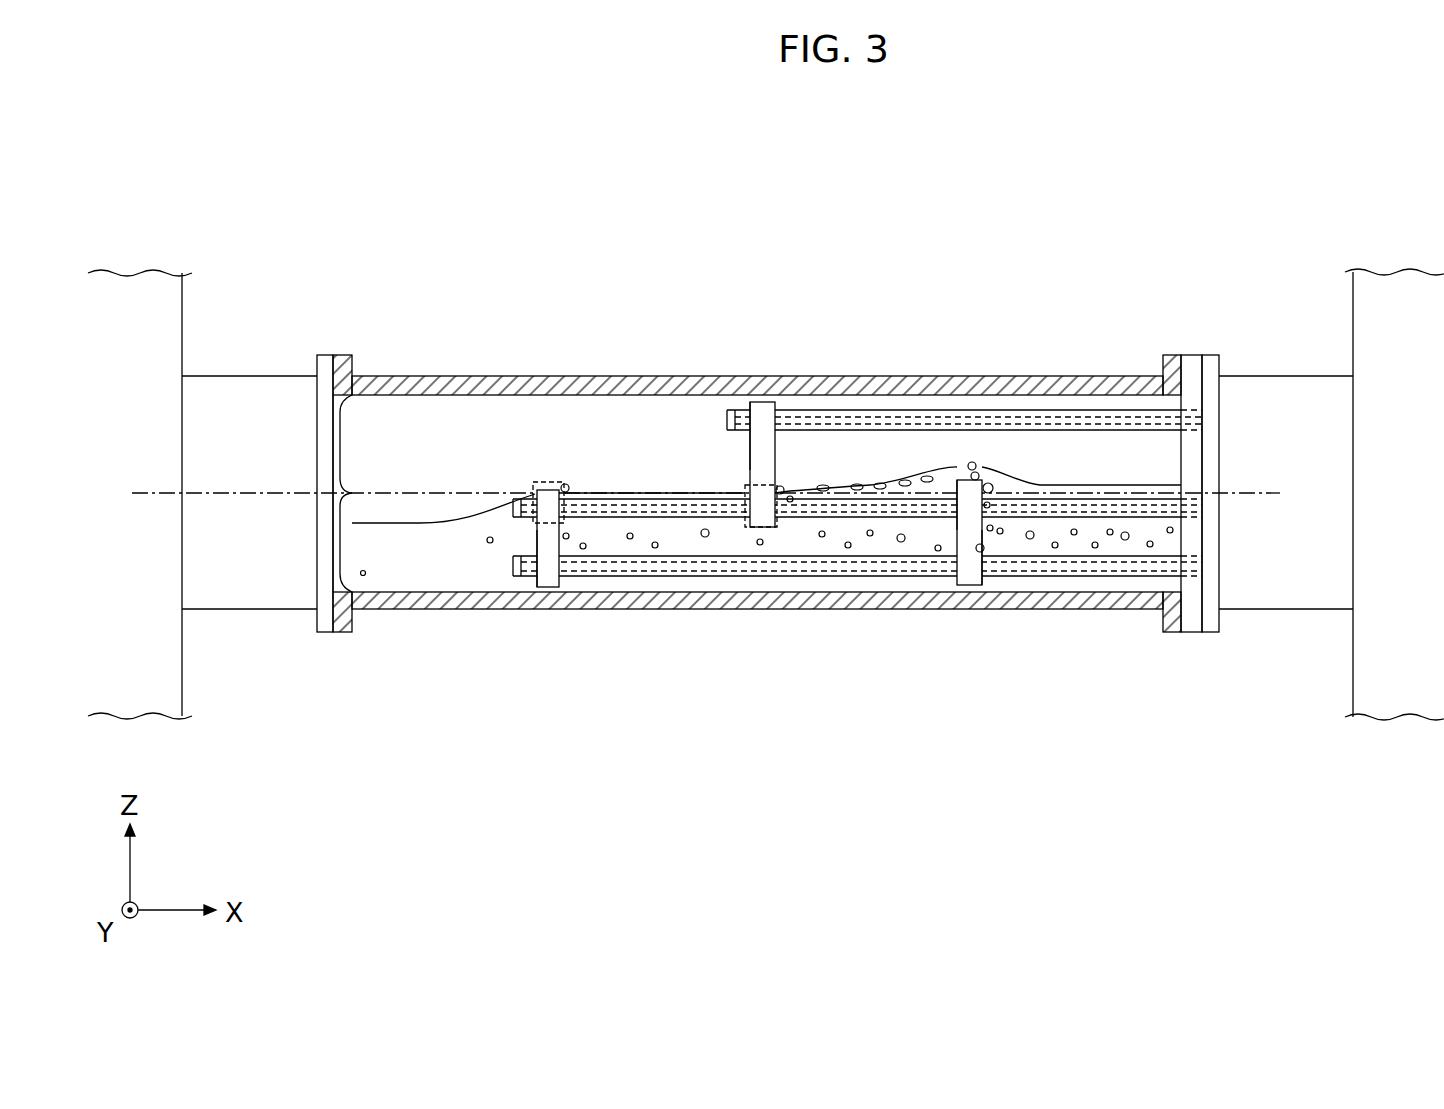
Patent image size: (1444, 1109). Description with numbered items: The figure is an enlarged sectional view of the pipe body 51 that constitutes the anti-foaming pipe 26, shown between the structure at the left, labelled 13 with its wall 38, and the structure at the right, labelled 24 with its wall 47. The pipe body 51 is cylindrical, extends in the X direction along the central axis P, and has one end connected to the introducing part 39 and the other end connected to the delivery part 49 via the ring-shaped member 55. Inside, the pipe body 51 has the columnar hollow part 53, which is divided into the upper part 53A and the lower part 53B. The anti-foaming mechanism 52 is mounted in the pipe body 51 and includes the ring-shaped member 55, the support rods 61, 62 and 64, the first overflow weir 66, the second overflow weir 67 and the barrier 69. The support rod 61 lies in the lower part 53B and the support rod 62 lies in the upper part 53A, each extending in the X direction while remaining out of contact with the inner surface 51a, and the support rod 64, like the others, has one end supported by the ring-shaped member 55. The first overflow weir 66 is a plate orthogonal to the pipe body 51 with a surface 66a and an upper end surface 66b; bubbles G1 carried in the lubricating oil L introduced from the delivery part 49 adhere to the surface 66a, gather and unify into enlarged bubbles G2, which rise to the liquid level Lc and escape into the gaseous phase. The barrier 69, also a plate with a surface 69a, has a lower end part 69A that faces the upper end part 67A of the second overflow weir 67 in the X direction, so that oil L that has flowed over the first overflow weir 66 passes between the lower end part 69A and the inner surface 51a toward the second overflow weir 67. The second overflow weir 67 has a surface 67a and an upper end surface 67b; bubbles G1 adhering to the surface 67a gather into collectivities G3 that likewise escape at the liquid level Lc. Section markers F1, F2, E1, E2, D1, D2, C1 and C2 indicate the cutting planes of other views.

The first tank 13 is at (130, 258).
The second tank 24 is at (1396, 258).
The anti-foaming pipe 26 is at (402, 348).
The side wall of first tank 38 is at (160, 283).
The introducing part 39 is at (262, 388).
The side wall of second tank 47 is at (1358, 300).
The delivery part 49 is at (1257, 385).
The pipe body 51 is at (615, 390).
The inner surface 51a is at (375, 406).
The anti-foaming mechanism 52 is at (728, 455).
The hollow part 53 is at (282, 568).
The upper part 53A is at (330, 443).
The lower part 53B is at (330, 543).
The ring-shaped member 55 is at (1192, 360).
The support rod 61 is at (800, 577).
The support rod 62 is at (851, 410).
The support rod 64 is at (1168, 512).
The first overflow weir 66 is at (1006, 493).
The surface 66a is at (990, 540).
The upper end surface 66b is at (965, 478).
The second overflow weir 67 is at (545, 487).
The surface 67a is at (564, 532).
The upper end surface 67b is at (550, 487).
The upper end part 67A is at (536, 486).
The barrier 69 is at (779, 485).
The surface 69a is at (803, 488).
The lower end part 69A is at (752, 528).
The lubricating oil L is at (392, 573).
The liquid level Lc is at (988, 466).
The central axis P is at (215, 490).
The bubbles G1 is at (490, 545).
The unified and enlarged bubbles G2 is at (780, 486).
The bubbles G3 is at (566, 484).
The section line F1 is at (476, 327).
The section line F2 is at (445, 662).
The section line E1 is at (695, 327).
The section line E2 is at (663, 662).
The section line D1 is at (924, 327).
The section line D2 is at (892, 662).
The section line C1 is at (1121, 327).
The section line C2 is at (1089, 662).